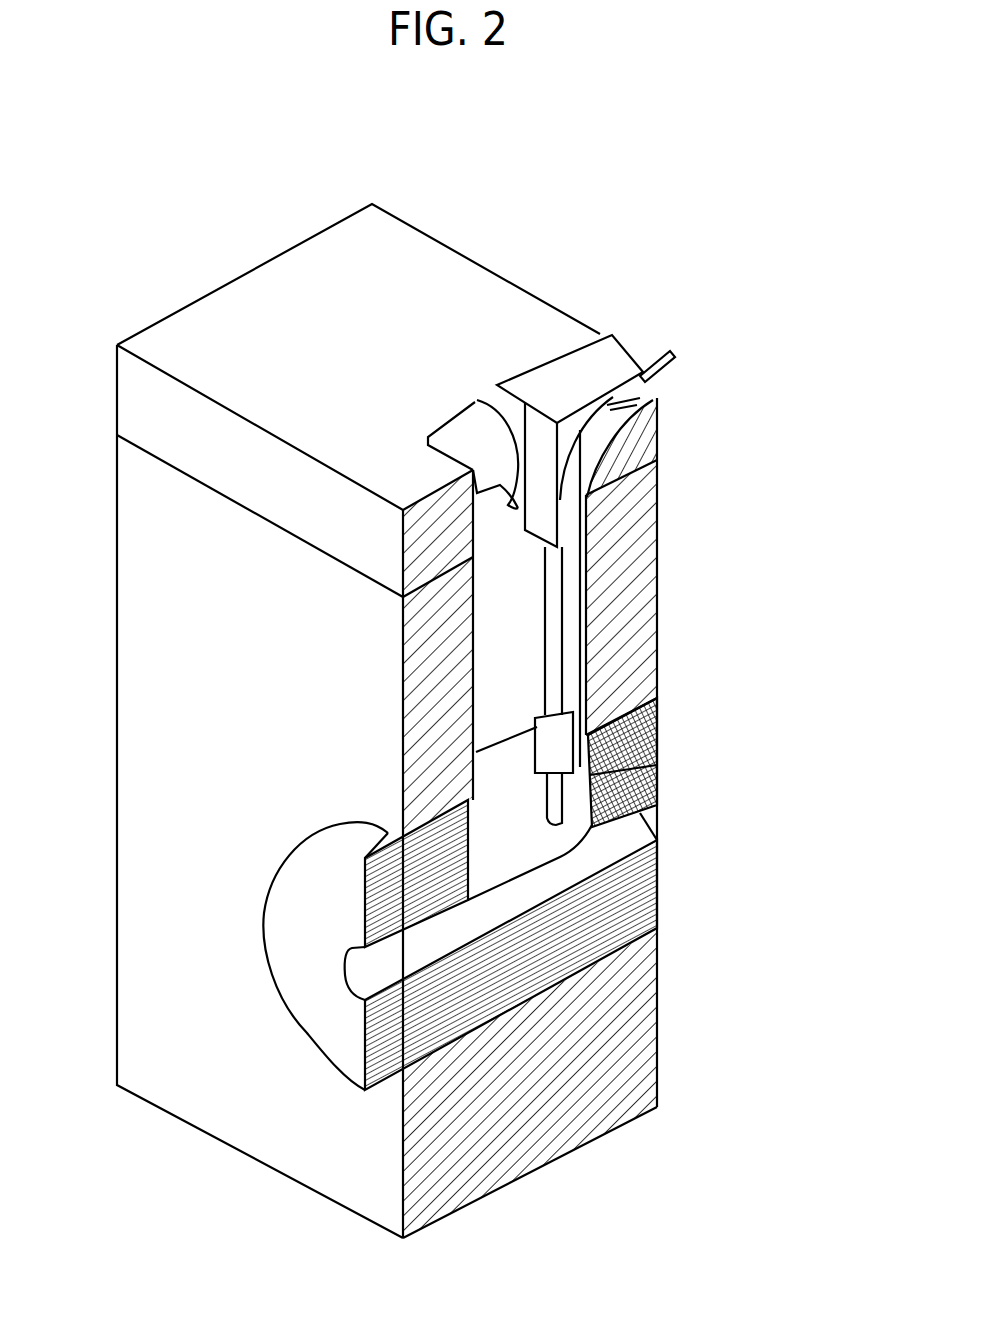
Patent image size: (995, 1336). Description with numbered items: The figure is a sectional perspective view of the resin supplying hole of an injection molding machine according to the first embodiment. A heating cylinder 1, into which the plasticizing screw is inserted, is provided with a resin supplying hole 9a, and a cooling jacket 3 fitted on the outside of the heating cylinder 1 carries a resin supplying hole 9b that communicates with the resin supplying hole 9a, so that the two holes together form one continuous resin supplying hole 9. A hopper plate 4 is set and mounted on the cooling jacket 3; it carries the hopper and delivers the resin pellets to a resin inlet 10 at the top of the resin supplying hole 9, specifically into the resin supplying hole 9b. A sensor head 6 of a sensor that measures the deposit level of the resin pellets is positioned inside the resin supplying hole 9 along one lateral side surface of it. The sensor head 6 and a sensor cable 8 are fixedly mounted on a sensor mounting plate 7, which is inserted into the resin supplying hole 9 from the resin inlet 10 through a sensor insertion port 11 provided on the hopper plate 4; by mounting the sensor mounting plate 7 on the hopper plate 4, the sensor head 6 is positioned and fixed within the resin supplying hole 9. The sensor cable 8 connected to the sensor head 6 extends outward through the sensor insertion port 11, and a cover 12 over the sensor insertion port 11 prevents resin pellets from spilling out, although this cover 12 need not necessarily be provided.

The heating cylinder 1 is at (660, 898).
The cooling jacket 3 is at (547, 1165).
The hopper plate 4 is at (458, 269).
The sensor head 6 is at (663, 767).
The sensor mounting plate 7 is at (657, 577).
The sensor cable 8 is at (562, 559).
The resin supplying hole 9 is at (773, 618).
The resin supplying hole 9a is at (507, 800).
The resin supplying hole 9b is at (520, 657).
The resin inlet 10 is at (497, 386).
The sensor insertion port 11 is at (648, 388).
The cover 12 is at (590, 334).